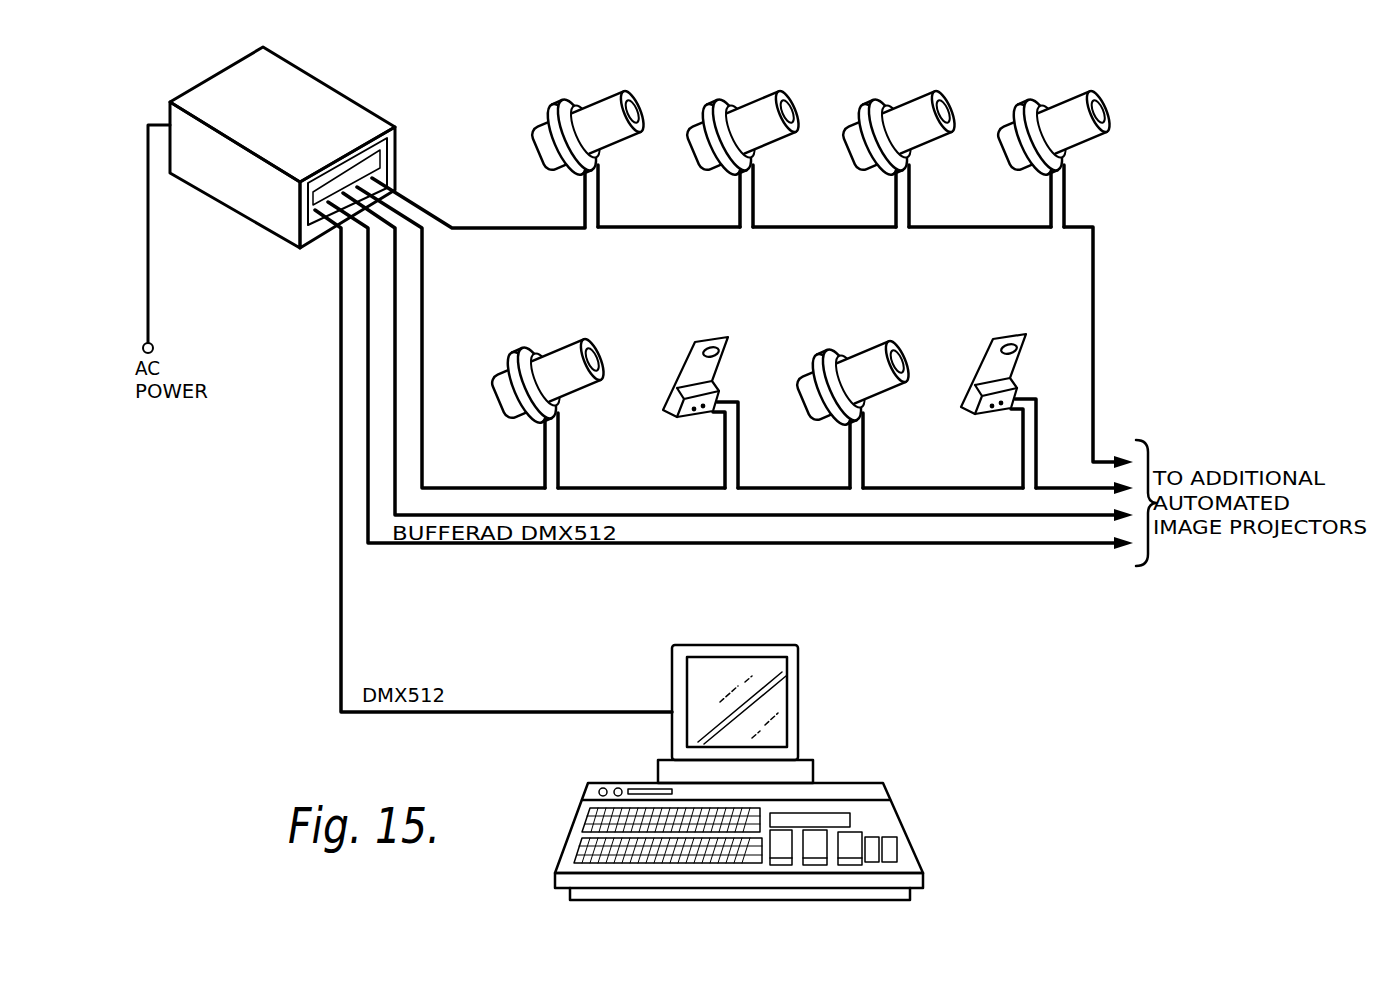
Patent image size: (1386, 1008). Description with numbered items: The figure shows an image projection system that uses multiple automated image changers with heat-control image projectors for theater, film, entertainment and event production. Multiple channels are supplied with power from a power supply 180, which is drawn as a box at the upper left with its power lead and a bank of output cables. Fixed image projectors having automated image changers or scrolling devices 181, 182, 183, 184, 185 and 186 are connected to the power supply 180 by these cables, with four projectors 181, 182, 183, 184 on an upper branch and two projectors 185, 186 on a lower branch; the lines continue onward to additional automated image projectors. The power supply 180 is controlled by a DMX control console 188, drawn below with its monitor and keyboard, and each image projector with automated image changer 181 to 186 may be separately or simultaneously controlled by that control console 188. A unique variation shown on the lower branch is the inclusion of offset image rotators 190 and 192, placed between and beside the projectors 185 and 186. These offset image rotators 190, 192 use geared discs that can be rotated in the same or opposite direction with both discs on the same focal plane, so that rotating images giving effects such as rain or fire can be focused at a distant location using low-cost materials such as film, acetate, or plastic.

The power supply 180 is at (367, 110).
The fixed image projector with automated image changer 181 is at (603, 100).
The fixed image projector with automated image changer 182 is at (758, 100).
The fixed image projector with automated image changer 183 is at (910, 100).
The fixed image projector with automated image changer 184 is at (1080, 98).
The fixed image projector with automated image changer 185 is at (577, 352).
The fixed image projector with automated image changer 186 is at (890, 352).
The DMX 512 control console 188 is at (905, 817).
The offset image rotator 190 is at (720, 334).
The offset image rotator 192 is at (1020, 333).